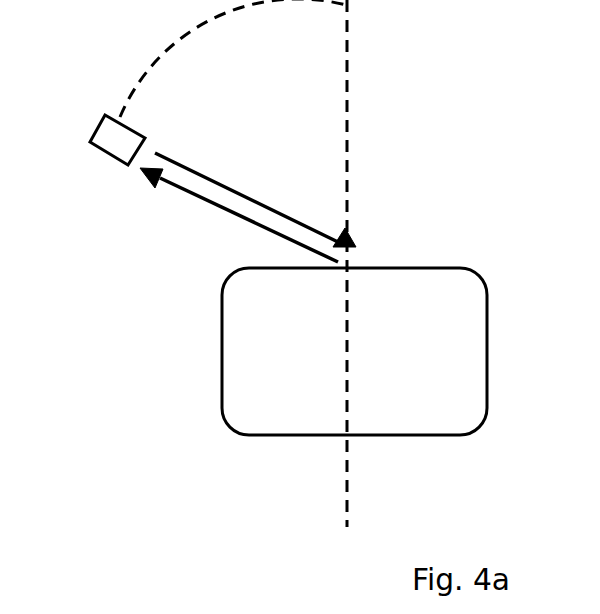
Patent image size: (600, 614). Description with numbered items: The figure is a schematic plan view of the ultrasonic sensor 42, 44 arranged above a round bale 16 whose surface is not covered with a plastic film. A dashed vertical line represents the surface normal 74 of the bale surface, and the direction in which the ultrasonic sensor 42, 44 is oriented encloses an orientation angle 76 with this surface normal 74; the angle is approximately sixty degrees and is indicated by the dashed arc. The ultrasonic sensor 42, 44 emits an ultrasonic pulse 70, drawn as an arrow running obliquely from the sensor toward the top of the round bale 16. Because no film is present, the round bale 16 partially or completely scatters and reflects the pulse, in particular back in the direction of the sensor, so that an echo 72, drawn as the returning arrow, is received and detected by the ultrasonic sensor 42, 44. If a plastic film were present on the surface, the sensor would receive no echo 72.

The round bale 16 is at (262, 292).
The ultrasonic sensor 42 is at (188, 116).
The ultrasonic sensor 44 is at (112, 137).
The ultrasonic pulse 70 is at (245, 195).
The echo 72 is at (225, 210).
The surface normal 74 is at (348, 102).
The orientation angle 76 is at (150, 63).